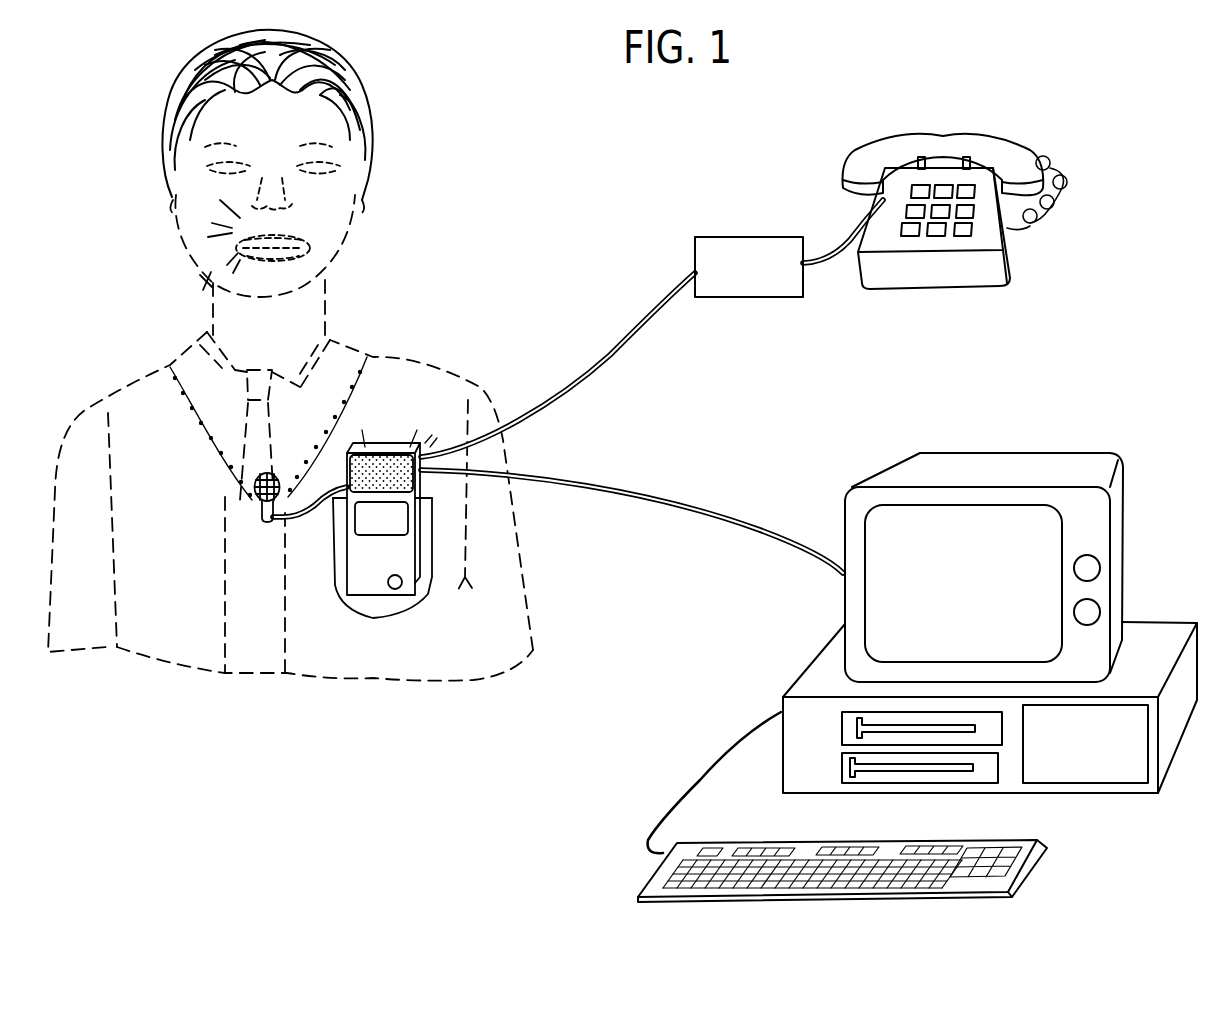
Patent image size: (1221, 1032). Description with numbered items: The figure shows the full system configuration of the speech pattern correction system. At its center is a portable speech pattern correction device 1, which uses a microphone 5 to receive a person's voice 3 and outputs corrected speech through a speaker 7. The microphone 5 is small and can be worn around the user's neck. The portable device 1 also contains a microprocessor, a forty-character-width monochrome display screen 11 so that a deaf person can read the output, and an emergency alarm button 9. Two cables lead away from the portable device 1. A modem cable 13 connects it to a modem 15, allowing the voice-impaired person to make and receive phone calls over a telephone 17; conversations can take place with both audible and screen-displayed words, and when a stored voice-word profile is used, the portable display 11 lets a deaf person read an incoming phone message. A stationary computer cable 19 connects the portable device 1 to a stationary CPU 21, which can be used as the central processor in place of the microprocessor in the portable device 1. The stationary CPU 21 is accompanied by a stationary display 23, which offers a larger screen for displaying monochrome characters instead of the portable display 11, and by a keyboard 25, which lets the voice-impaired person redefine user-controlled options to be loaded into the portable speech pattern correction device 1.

The portable speech pattern correction device 1 is at (358, 565).
The person's voice 3 is at (237, 245).
The microphone 5 is at (267, 474).
The speaker 7 is at (373, 470).
The emergency alarm button 9 is at (398, 589).
The display screen 11 is at (358, 522).
The modem cable 13 is at (592, 377).
The modem 15 is at (737, 237).
The telephone 17 is at (1009, 261).
The stationary computer (CPU) cable 19 is at (632, 486).
The stationary CPU 21 is at (1088, 773).
The stationary display 23 is at (882, 528).
The keyboard 25 is at (1035, 865).